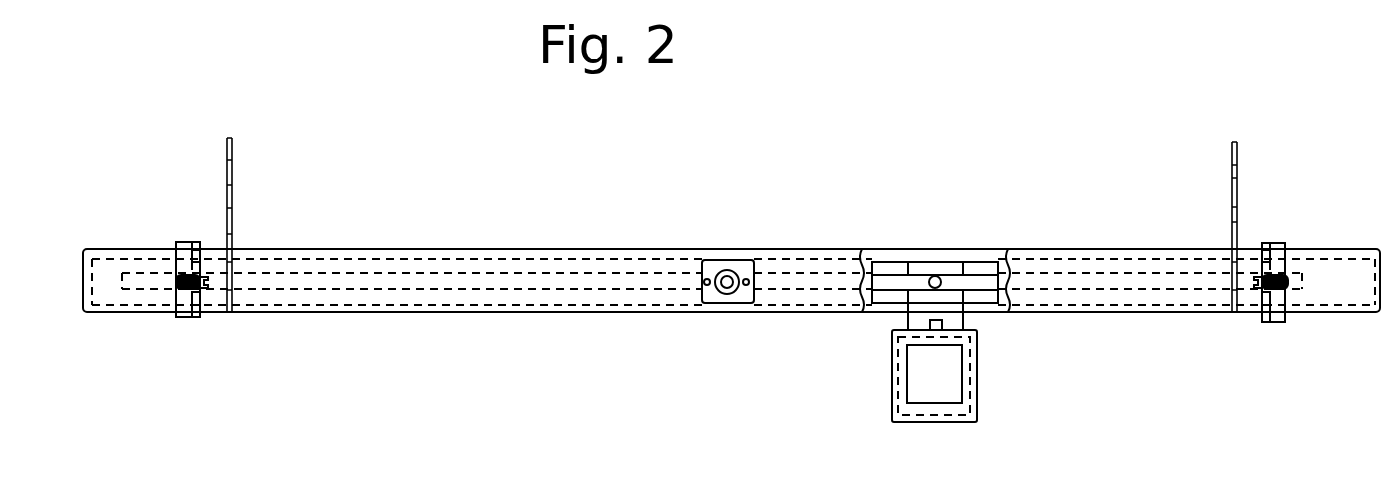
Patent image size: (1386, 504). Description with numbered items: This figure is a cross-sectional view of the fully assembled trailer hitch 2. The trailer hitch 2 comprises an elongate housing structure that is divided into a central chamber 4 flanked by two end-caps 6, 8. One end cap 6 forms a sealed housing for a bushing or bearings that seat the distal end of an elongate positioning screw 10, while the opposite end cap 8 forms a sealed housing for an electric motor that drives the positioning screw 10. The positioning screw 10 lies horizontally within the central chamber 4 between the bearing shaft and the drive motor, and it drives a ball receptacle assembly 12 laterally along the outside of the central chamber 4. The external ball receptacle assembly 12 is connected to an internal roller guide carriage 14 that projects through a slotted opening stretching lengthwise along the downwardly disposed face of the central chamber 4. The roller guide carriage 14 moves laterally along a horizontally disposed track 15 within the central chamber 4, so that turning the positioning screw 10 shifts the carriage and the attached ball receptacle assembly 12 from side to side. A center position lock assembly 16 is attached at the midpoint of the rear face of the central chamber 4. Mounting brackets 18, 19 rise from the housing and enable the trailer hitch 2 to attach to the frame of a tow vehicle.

The trailer hitch 2 is at (452, 377).
The central chamber 4 is at (610, 250).
The end-cap 6 is at (138, 248).
The end-cap 8 is at (1343, 249).
The positioning screw 10 is at (453, 277).
The ball receptacle assembly 12 is at (977, 372).
The roller guide carriage 14 is at (920, 270).
The track 15 is at (1132, 267).
The center position lock assembly 16 is at (727, 273).
The mounting bracket 18 is at (233, 155).
The mounting bracket 19 is at (1230, 195).